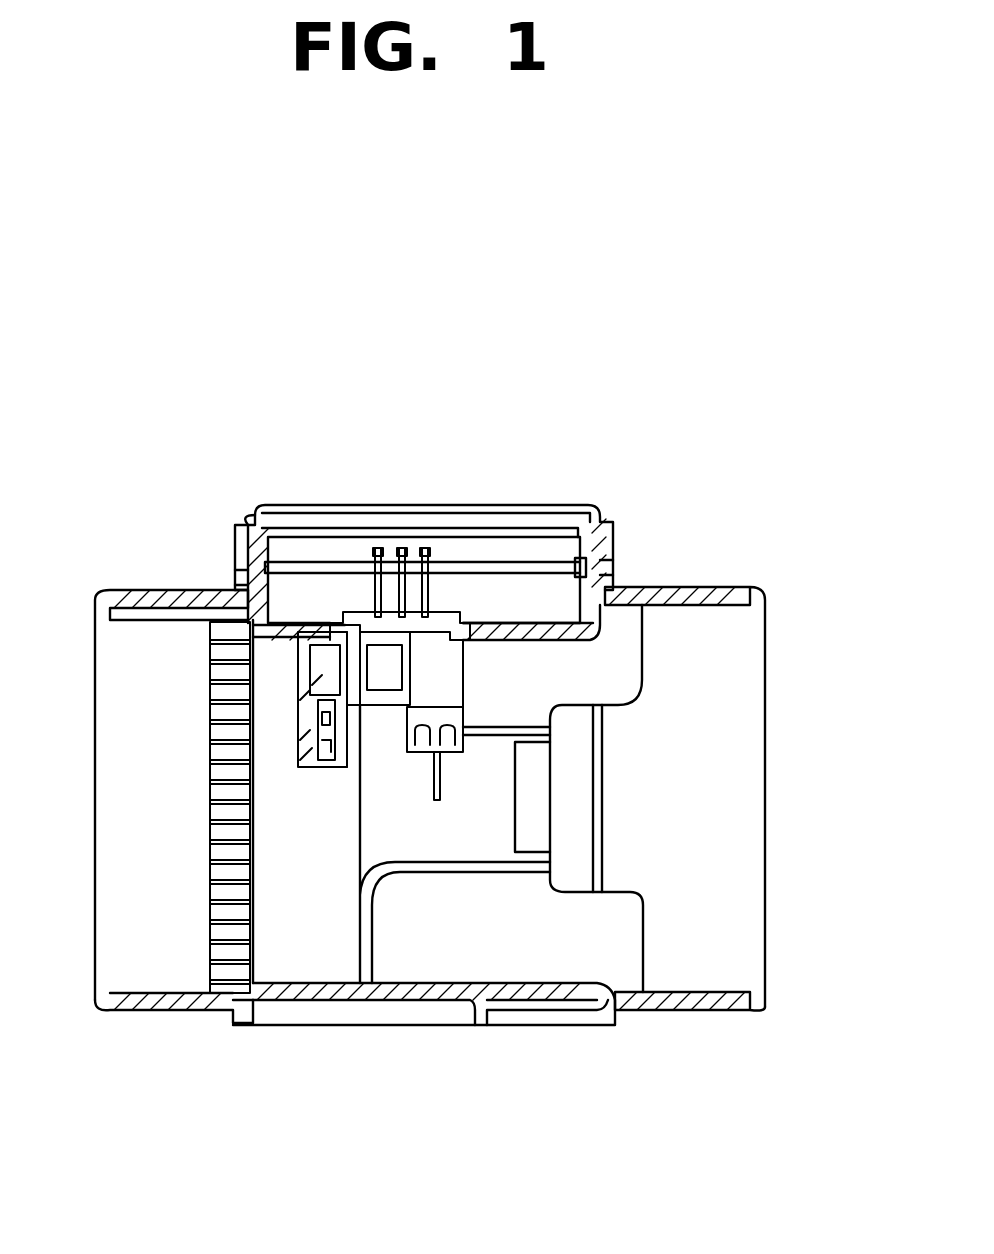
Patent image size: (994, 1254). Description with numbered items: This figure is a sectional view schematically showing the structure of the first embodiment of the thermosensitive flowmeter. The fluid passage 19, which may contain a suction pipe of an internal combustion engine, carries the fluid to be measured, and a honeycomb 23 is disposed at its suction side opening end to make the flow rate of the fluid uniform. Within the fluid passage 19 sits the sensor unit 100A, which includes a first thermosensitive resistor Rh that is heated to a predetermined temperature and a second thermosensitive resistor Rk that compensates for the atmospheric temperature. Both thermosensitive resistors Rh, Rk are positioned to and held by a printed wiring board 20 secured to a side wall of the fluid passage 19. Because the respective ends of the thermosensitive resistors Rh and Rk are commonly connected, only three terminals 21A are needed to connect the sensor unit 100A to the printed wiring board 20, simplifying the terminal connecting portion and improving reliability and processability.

The fluid passage 19 is at (133, 588).
The printed wiring board 20 is at (512, 562).
The terminals 21A is at (400, 548).
The honeycomb 23 is at (210, 915).
The sensor unit 100A is at (793, 751).
The second thermosensitive resistor Rk is at (313, 767).
The first thermosensitive resistor Rh is at (428, 767).